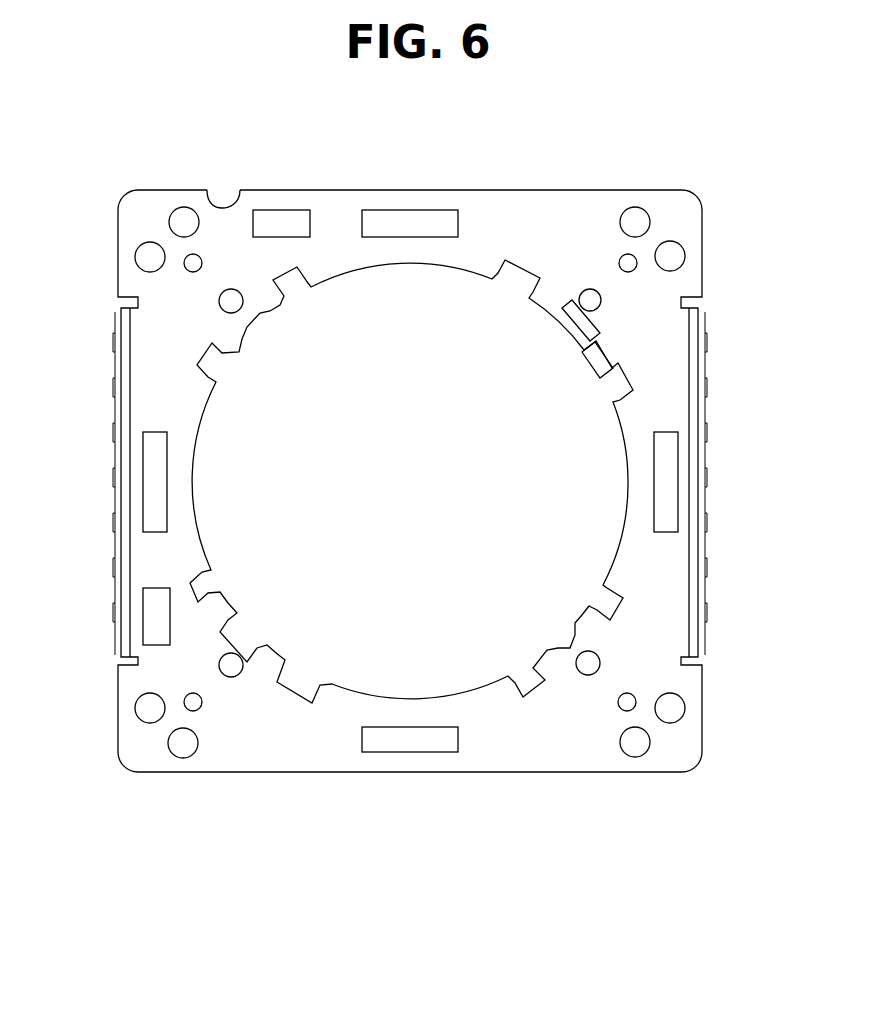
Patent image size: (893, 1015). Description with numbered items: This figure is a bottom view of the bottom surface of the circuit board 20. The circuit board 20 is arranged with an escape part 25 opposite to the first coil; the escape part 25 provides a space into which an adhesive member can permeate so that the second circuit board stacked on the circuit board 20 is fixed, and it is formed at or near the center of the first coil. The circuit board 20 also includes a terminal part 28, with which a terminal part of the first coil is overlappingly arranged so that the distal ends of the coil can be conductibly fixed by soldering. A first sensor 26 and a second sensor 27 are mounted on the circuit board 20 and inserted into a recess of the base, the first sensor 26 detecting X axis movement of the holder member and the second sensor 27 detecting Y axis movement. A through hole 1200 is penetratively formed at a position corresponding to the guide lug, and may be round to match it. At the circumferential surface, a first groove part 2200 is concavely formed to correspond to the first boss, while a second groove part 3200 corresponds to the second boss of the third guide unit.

The circuit board 20 is at (528, 238).
The first groove part 2200 is at (221, 207).
The first sensor 26 is at (289, 223).
The through hole 1200 is at (594, 302).
The second groove part 3200 is at (247, 318).
The terminal part 28 is at (588, 328).
The second sensor 27 is at (143, 620).
The escape part 25 is at (411, 746).